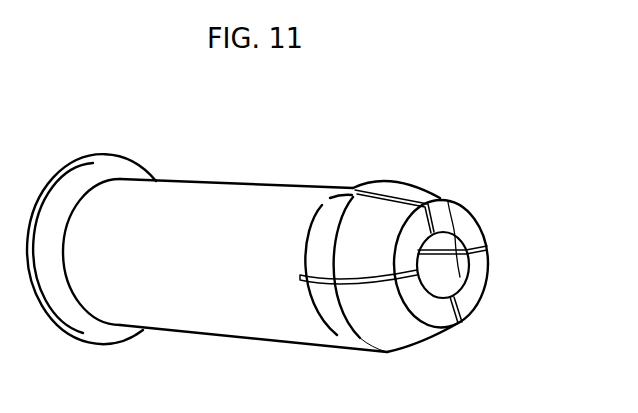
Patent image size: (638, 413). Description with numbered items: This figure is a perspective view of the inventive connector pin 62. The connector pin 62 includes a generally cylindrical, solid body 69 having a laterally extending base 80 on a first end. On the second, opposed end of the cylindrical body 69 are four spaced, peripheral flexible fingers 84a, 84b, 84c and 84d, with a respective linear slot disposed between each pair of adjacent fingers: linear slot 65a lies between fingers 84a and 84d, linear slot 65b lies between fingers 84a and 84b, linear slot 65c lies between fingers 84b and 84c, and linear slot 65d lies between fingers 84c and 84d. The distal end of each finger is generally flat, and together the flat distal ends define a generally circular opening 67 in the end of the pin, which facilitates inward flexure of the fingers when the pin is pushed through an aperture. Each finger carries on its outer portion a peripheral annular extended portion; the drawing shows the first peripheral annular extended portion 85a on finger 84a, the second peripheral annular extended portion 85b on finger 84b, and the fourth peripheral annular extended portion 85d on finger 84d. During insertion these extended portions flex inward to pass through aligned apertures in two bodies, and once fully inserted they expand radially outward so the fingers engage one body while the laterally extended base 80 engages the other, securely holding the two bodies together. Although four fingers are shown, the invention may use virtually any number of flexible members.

The connector pin 62 is at (314, 139).
The linear slot 65a is at (353, 290).
The linear slot 65b is at (432, 197).
The linear slot 65c is at (483, 240).
The linear slot 65d is at (466, 322).
The circular opening 67 is at (450, 240).
The cylindrical body 69 is at (210, 182).
The base 80 is at (103, 157).
The peripheral finger 84a is at (407, 235).
The peripheral finger 84b is at (430, 198).
The peripheral finger 84c is at (477, 287).
The peripheral finger 84d is at (425, 312).
The peripheral annular extended portion 85a is at (330, 240).
The peripheral annular extended portion 85b is at (398, 186).
The peripheral annular extended portion 85d is at (387, 350).